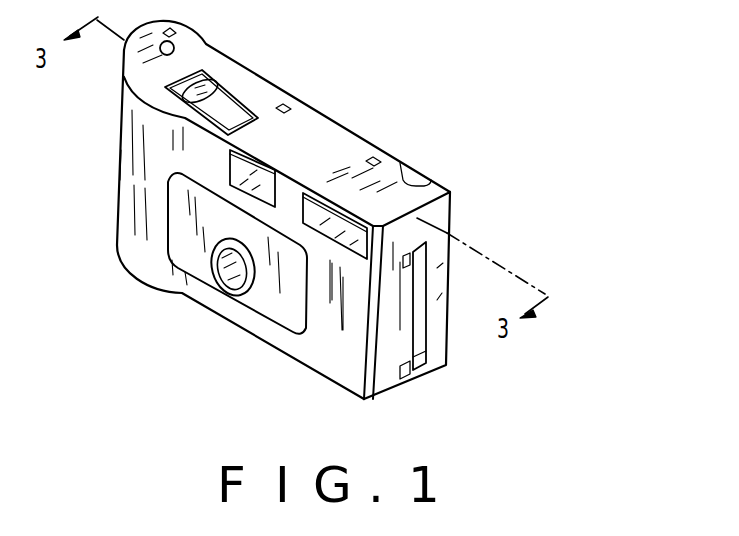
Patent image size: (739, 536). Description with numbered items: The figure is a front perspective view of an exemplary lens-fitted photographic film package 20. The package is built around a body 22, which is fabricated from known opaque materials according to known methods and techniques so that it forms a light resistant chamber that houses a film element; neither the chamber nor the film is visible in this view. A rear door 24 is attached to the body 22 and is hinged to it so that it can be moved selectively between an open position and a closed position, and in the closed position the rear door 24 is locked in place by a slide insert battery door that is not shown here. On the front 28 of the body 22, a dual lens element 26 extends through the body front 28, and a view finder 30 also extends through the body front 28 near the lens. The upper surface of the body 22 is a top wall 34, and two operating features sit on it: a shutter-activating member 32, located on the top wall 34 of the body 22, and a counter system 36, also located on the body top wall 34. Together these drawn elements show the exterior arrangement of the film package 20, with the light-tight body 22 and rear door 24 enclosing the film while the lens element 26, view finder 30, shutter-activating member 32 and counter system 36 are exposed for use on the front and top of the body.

The lens-fitted photographic film package 20 is at (393, 54).
The body 22 is at (337, 357).
The rear door 24 is at (433, 285).
The dual lens element 26 is at (231, 276).
The front 28 is at (184, 283).
The view finder 30 is at (258, 175).
The shutter-activating member 32 is at (229, 108).
The top wall 34 is at (383, 183).
The counter system 36 is at (172, 42).